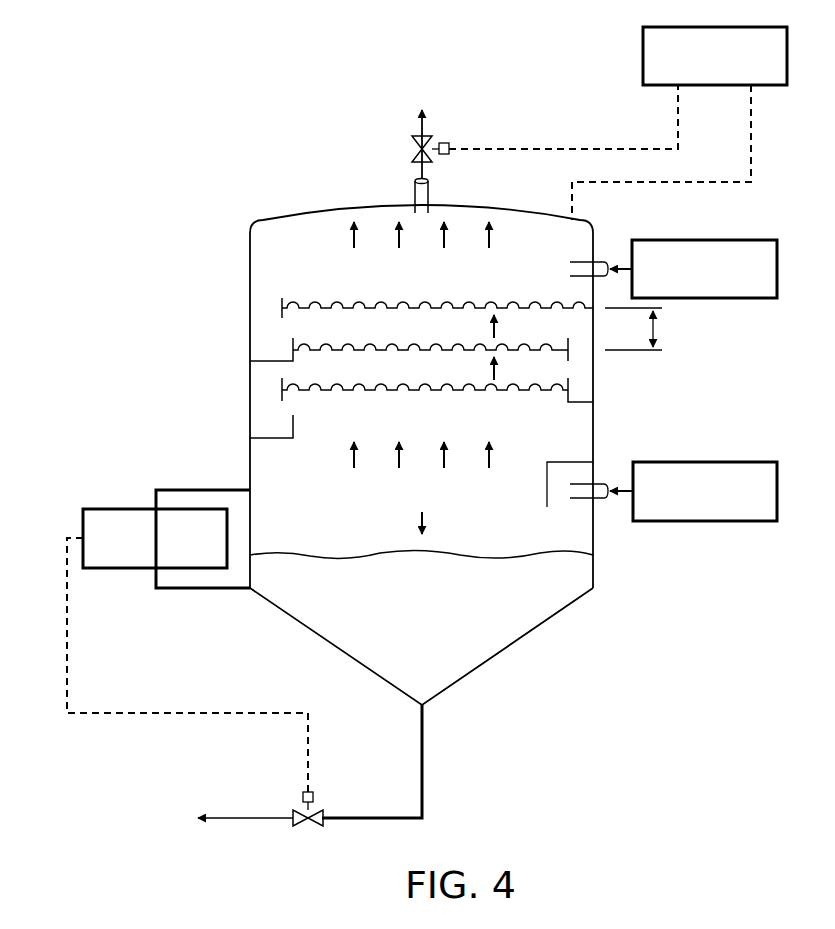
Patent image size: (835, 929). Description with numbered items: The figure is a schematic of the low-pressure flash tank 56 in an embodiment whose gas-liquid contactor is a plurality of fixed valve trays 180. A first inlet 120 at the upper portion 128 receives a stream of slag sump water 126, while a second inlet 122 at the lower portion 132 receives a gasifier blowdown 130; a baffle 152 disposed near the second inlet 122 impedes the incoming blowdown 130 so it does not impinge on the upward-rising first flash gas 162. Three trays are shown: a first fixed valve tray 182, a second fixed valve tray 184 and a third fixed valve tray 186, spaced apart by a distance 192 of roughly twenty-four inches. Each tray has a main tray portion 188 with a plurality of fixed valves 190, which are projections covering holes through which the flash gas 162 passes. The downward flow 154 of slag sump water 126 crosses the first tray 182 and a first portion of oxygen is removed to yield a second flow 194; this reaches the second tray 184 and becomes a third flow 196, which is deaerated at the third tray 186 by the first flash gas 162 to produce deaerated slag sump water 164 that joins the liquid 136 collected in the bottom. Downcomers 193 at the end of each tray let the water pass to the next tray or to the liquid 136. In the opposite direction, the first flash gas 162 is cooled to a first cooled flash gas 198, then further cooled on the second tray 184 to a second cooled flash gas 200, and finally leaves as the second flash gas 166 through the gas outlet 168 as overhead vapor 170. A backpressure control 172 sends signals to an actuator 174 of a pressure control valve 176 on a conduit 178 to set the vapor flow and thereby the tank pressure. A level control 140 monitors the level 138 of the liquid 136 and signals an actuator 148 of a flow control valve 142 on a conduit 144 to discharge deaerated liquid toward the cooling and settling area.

The low-pressure flash tank 56 is at (206, 139).
The first inlet 120 is at (590, 262).
The second inlet 122 is at (600, 482).
The slag sump water 126 is at (705, 240).
The upper portion 128 is at (612, 216).
The gasifier blowdown 130 is at (705, 462).
The lower portion 132 is at (610, 540).
The liquid 136 is at (421, 646).
The level 138 is at (352, 550).
The level control 140 is at (118, 509).
The flow control valve 142 is at (304, 826).
The conduit 144 is at (423, 762).
The actuator 148 is at (314, 797).
The baffle 152 is at (546, 488).
The downward flow 154 is at (560, 268).
The first flash gas 162 is at (352, 456).
The deaerated slag sump water 164 is at (420, 516).
The second flash gas 166 is at (487, 240).
The gas outlet 168 is at (429, 196).
The overhead vapor 170 is at (418, 110).
The backpressure control 172 is at (643, 58).
The actuator 174 is at (446, 142).
The pressure control valve 176 is at (410, 148).
The conduit 178 is at (424, 126).
The fixed valve trays 180 is at (379, 358).
The first fixed valve tray 182 is at (580, 314).
The second fixed valve tray 184 is at (270, 366).
The third fixed valve tray 186 is at (584, 408).
The main tray portion 188 is at (288, 306).
The fixed valves 190 is at (382, 302).
The distance 192 is at (655, 330).
The downcomers 193 is at (282, 300).
The second flow 194 is at (265, 326).
The third flow 196 is at (590, 325).
The first cooled flash gas 198 is at (493, 371).
The second cooled flash gas 200 is at (493, 330).